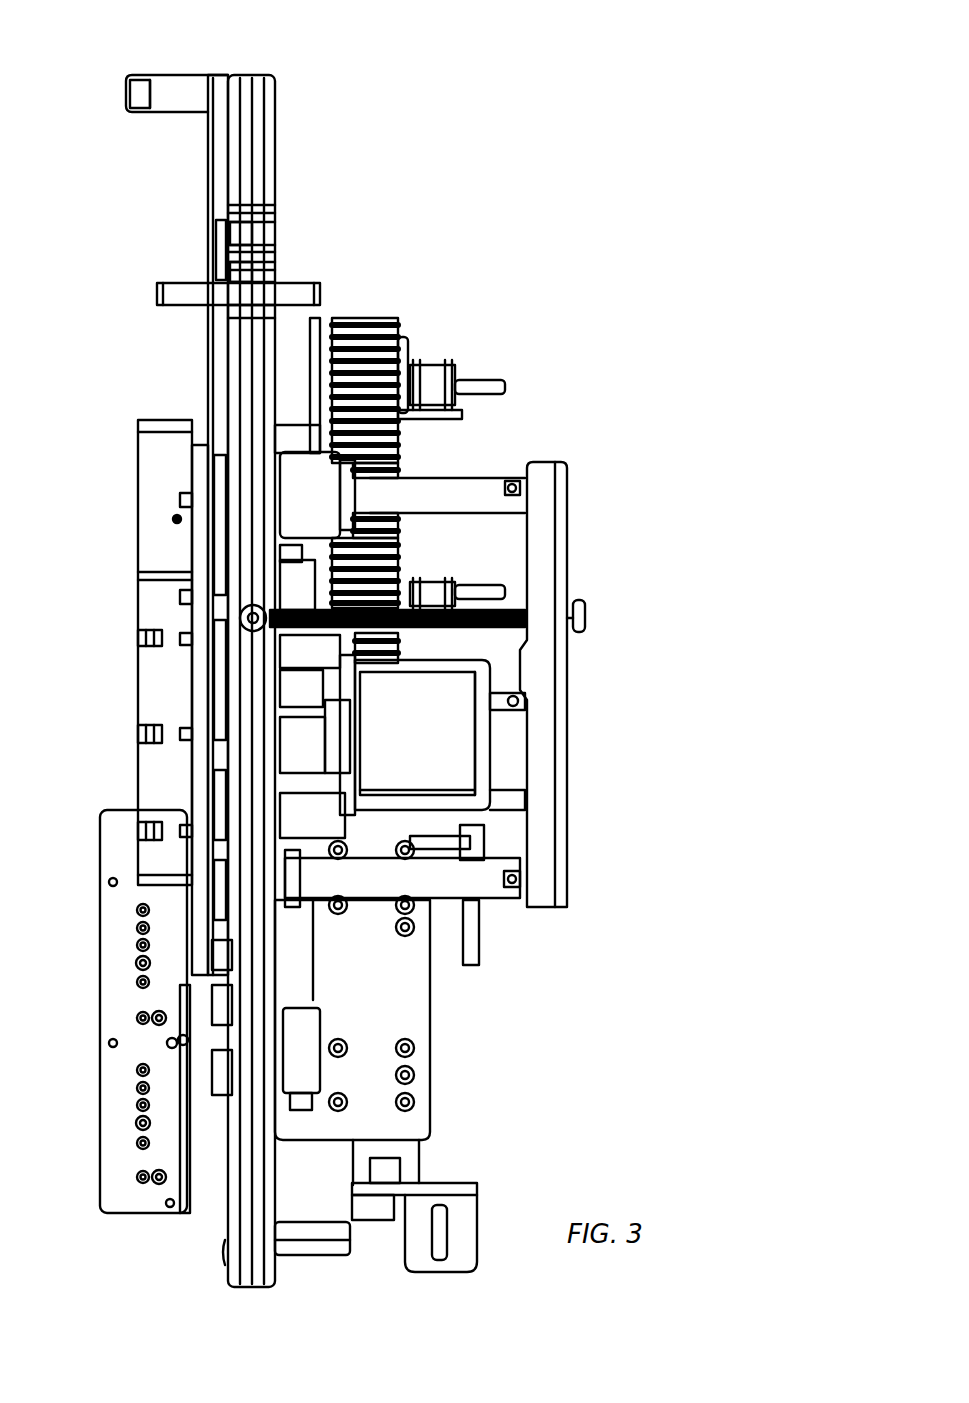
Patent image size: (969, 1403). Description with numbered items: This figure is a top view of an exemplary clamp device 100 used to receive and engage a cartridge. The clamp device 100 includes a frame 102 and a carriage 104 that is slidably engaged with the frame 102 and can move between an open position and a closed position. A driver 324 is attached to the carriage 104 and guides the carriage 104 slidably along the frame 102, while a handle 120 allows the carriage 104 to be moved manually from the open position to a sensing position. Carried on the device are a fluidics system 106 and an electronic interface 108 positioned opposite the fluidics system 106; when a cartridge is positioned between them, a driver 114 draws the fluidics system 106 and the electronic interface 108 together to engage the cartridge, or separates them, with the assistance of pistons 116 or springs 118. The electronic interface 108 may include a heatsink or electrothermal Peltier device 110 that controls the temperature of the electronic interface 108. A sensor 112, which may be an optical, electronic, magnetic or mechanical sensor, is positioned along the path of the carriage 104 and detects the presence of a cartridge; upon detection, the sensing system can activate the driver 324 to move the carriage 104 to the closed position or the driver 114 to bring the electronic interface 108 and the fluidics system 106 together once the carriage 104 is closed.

The clamp device 100 is at (514, 89).
The frame 102 is at (259, 145).
The carriage 104 is at (212, 182).
The fluidics system 106 is at (150, 515).
The electronic interface 108 is at (278, 470).
The Peltier device 110 is at (377, 320).
The sensor 112 is at (177, 298).
The driver 114 is at (413, 773).
The pistons 116 is at (472, 500).
The springs 118 is at (457, 378).
The handle 120 is at (175, 95).
The driver 324 is at (405, 1157).